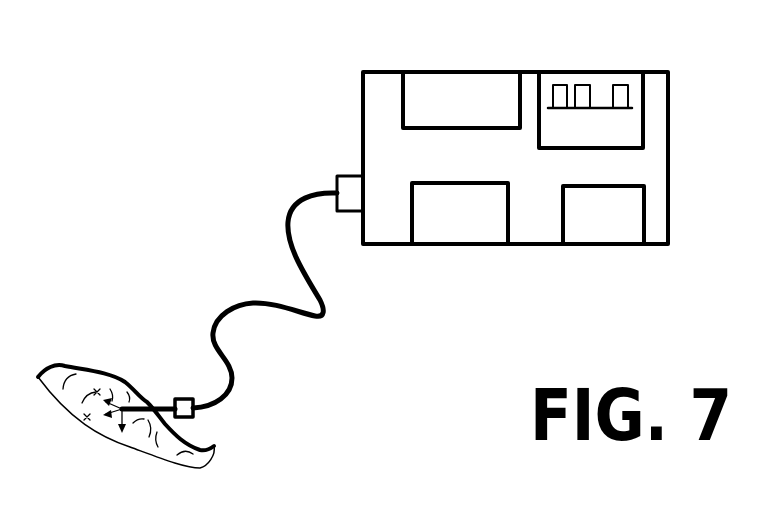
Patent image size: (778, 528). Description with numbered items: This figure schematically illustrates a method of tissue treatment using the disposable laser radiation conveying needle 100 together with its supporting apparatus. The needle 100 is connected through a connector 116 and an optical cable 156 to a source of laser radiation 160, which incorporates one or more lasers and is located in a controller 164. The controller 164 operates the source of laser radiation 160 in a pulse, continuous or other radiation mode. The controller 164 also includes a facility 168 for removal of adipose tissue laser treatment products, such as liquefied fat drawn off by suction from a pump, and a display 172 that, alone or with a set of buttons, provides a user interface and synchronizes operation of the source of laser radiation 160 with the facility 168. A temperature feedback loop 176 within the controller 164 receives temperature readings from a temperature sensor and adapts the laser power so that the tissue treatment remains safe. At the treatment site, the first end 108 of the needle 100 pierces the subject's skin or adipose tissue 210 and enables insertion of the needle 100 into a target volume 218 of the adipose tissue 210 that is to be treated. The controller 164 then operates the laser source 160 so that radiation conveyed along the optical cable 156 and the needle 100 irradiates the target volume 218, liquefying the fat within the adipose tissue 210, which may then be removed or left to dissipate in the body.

The needle 100 is at (113, 398).
The first end 108 is at (124, 412).
The connector 116 is at (177, 401).
The optical cable 156 is at (305, 322).
The source of laser radiation 160 is at (462, 223).
The controller 164 is at (552, 230).
The facility 168 is at (458, 92).
The display 172 is at (554, 80).
The temperature feedback loop 176 is at (635, 199).
The adipose tissue 210 is at (70, 365).
The target volume 218 is at (92, 416).